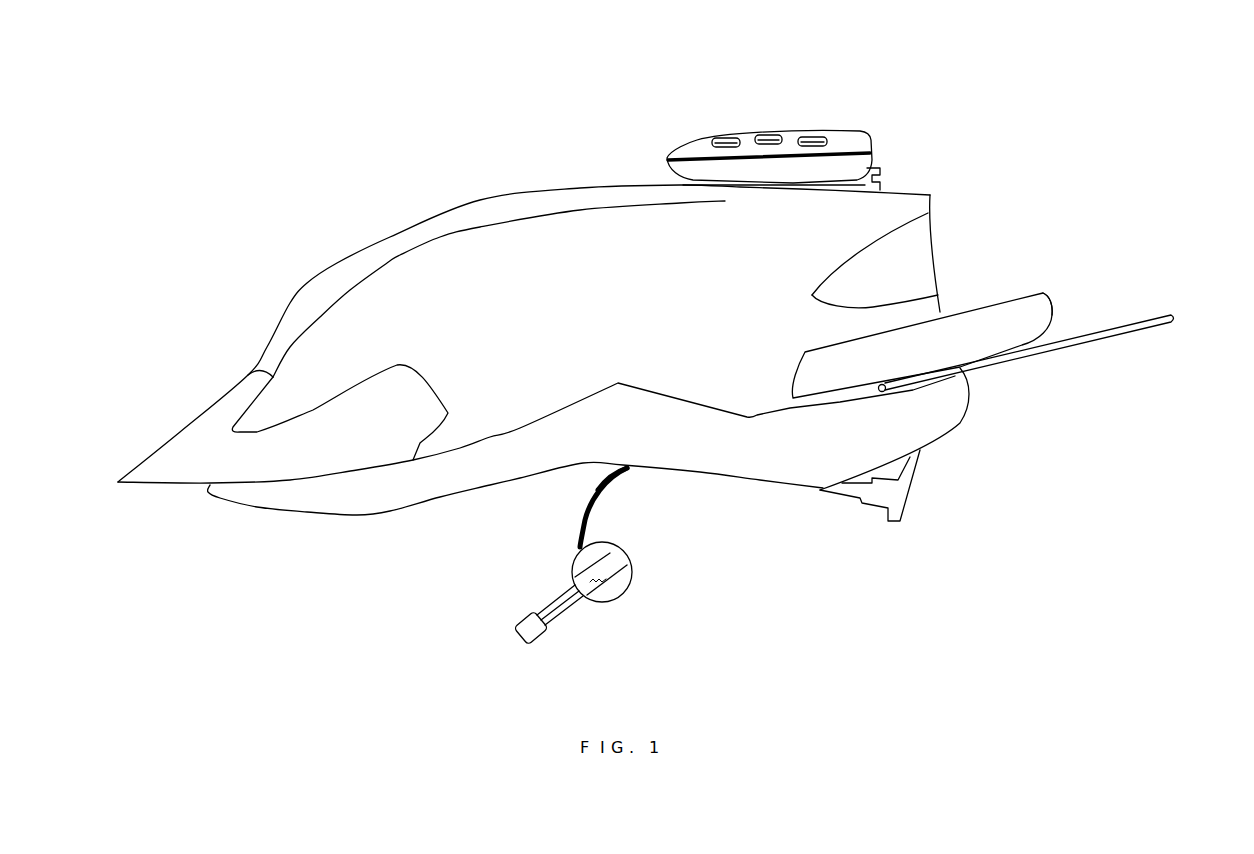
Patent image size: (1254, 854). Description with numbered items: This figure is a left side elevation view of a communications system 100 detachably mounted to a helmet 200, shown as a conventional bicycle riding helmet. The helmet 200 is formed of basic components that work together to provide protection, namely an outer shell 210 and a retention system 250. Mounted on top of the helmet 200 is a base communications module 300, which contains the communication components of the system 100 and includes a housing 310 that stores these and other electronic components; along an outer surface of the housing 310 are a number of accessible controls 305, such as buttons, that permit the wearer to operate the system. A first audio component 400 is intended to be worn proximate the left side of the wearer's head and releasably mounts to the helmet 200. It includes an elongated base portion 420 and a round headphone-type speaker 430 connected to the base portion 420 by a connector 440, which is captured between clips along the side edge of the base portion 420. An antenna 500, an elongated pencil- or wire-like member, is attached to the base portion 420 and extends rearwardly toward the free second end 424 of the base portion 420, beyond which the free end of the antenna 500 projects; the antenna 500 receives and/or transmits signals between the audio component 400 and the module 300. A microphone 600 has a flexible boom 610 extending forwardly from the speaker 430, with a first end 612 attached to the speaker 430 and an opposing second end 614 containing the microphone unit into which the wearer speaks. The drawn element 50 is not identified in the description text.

The communications system 100 is at (850, 100).
The helmet 200 is at (485, 190).
The outer shell 210 is at (390, 303).
The retention system 250 is at (862, 510).
The base communications module 300 is at (877, 130).
The controls 305 is at (765, 127).
The housing 310 is at (815, 123).
The base portion 420 is at (997, 337).
The second end 424 is at (1050, 313).
The accessory rod 50 is at (1172, 312).
The antenna 500 is at (1092, 340).
The first audio component 400 is at (577, 510).
The connector 440 is at (622, 477).
The speaker 430 is at (613, 607).
The first end 612 is at (627, 563).
The microphone 600 is at (560, 625).
The microphone boom 610 is at (553, 603).
The second end 614 is at (512, 632).